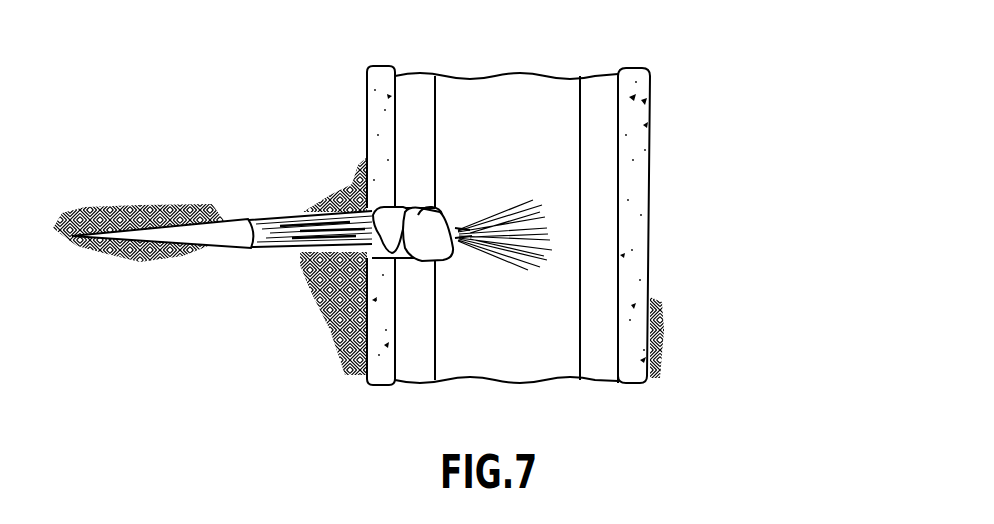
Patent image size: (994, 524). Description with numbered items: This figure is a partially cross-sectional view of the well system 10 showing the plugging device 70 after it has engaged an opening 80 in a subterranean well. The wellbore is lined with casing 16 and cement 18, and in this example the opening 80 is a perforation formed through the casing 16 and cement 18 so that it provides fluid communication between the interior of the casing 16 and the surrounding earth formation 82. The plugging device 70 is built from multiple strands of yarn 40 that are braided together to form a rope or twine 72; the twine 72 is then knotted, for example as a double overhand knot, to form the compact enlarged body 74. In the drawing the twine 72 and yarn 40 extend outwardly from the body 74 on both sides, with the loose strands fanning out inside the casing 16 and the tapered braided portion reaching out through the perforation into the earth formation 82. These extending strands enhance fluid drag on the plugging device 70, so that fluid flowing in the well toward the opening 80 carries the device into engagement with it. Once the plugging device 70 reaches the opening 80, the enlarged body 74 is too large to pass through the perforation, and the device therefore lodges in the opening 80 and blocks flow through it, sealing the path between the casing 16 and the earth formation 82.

The well system 10 is at (760, 58).
The casing 16 is at (620, 270).
The cement 18 is at (367, 105).
The yarn 40 is at (515, 207).
The plugging device 70 is at (462, 272).
The twine 72 is at (460, 228).
The enlarged body 74 is at (357, 187).
The opening 80 is at (445, 208).
The earth formation 82 is at (131, 103).